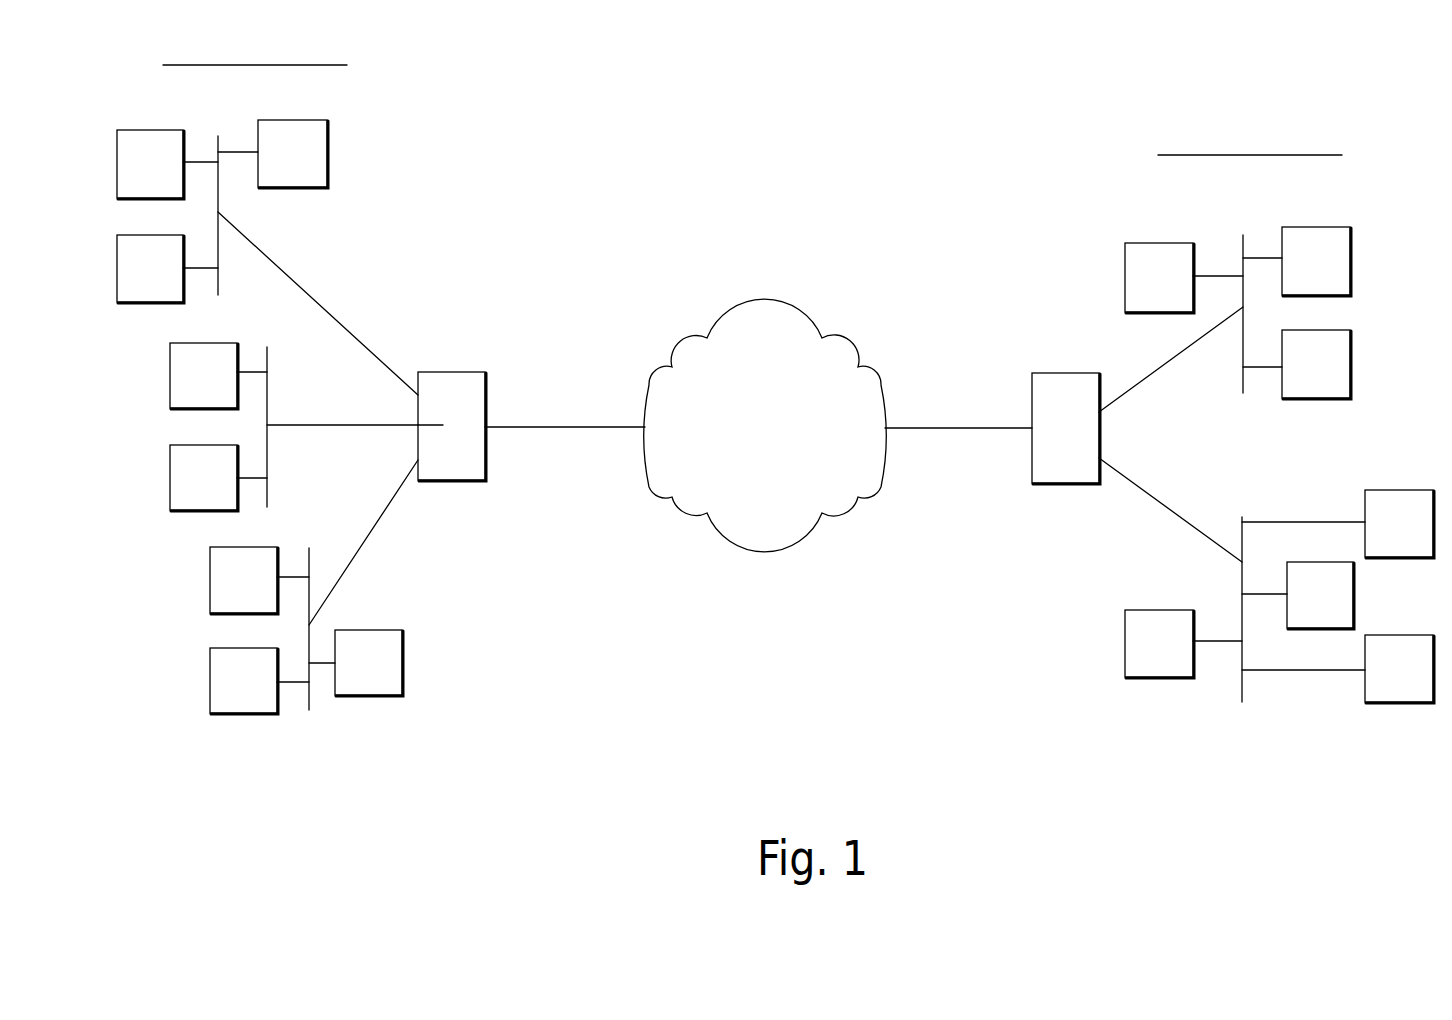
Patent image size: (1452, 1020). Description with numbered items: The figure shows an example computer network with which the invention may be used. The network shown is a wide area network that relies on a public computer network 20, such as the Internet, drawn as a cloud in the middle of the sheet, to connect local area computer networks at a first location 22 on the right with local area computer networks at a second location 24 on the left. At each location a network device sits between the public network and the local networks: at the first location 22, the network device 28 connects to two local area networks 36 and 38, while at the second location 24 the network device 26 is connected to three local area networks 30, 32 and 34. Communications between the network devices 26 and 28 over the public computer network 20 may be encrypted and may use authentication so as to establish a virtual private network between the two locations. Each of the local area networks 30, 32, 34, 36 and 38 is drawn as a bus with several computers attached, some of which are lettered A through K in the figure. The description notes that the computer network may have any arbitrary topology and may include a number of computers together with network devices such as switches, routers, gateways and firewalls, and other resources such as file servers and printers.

The public computer network 20 is at (808, 318).
The first location 22 is at (1055, 285).
The second location 24 is at (390, 208).
The network device 26 is at (443, 372).
The network device 28 is at (1075, 373).
The local area network 30 is at (218, 136).
The local area network 32 is at (267, 349).
The local area network 34 is at (309, 556).
The local area network 36 is at (1243, 243).
The local area network 38 is at (1242, 520).